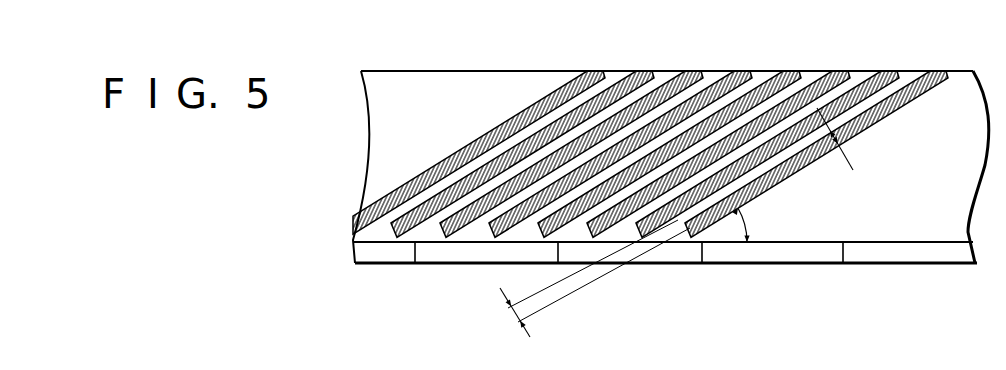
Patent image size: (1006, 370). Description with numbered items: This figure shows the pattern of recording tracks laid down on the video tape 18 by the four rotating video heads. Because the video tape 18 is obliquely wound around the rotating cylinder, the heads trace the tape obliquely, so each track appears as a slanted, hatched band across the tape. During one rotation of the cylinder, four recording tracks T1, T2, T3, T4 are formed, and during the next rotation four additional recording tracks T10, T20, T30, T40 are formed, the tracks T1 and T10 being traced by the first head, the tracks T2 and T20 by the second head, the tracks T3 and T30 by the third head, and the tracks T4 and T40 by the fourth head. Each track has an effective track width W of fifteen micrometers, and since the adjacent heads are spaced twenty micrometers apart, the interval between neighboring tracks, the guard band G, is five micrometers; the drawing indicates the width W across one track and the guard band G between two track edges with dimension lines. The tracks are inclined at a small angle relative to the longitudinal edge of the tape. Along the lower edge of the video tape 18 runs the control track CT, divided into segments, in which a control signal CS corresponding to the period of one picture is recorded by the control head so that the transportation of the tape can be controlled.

The video tape 18 is at (455, 70).
The recording track T40 is at (595, 71).
The recording track T30 is at (645, 71).
The recording track T20 is at (683, 71).
The recording track T10 is at (733, 71).
The recording track T4 is at (783, 71).
The recording track T3 is at (829, 71).
The recording track T2 is at (877, 71).
The recording track T1 is at (930, 71).
The effective track width W is at (853, 139).
The guard band G is at (508, 317).
The control signal CS is at (702, 250).
The control track CT is at (804, 250).